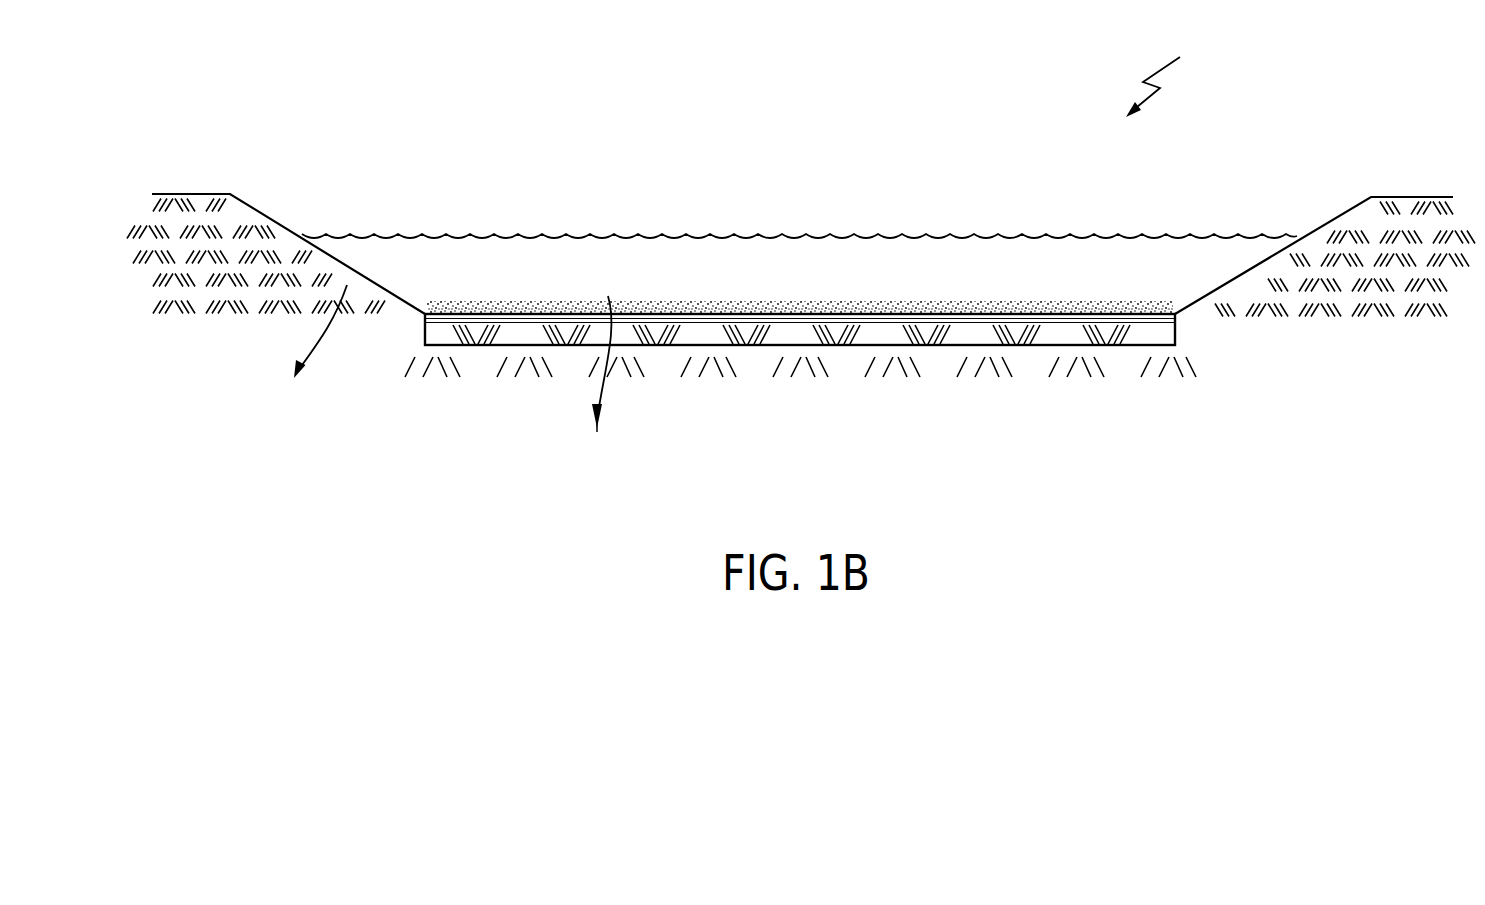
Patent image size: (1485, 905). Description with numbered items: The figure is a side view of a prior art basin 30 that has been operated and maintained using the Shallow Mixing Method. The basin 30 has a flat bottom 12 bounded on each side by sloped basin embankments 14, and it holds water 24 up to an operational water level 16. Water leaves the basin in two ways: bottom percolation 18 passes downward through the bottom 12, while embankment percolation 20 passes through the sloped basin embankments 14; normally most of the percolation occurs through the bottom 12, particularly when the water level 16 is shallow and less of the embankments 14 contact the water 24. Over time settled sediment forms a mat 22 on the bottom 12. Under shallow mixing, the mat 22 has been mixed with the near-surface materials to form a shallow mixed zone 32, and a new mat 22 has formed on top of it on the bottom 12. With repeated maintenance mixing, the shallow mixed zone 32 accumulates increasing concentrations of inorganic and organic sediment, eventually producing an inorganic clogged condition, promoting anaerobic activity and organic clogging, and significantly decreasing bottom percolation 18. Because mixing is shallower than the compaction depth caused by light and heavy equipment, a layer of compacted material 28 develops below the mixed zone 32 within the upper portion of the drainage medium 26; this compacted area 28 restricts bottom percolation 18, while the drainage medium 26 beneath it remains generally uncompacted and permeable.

The bottom 12 is at (1177, 316).
The basin embankments 14 is at (1345, 307).
The operational water level 16 is at (945, 240).
The bottom percolation 18 is at (595, 413).
The embankment percolation 20 is at (297, 365).
The settled sediment mat 22 is at (1068, 305).
The water 24 is at (583, 247).
The drainage medium 26 is at (1187, 378).
The compacted area 28 is at (1163, 335).
The basin 30 is at (1168, 75).
The shallow mixed zone 32 is at (1177, 321).